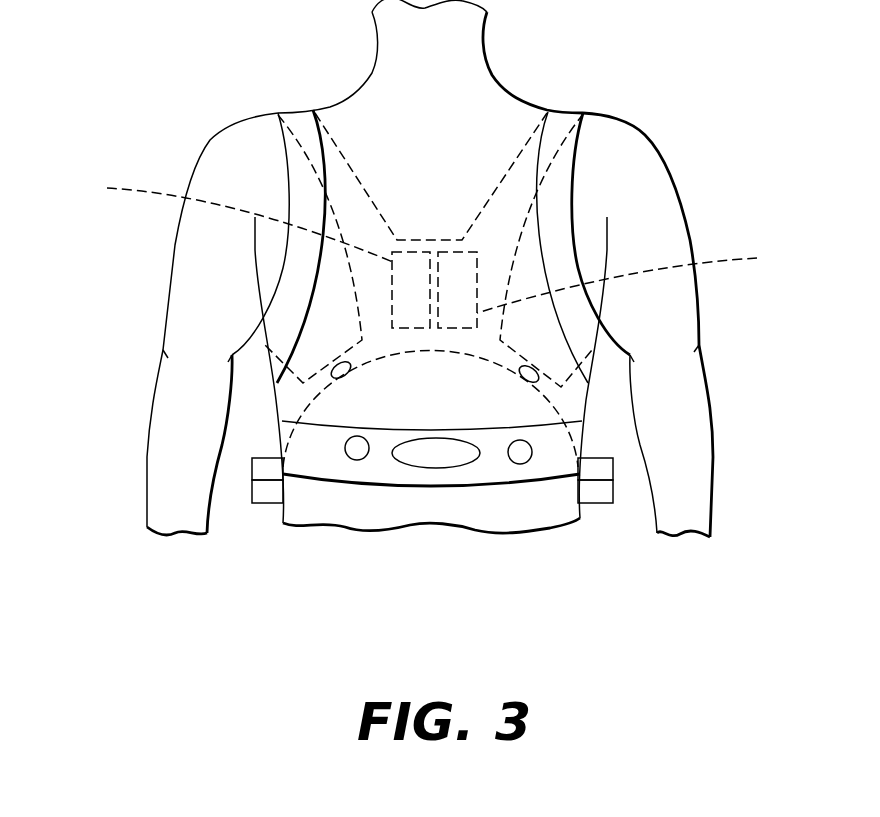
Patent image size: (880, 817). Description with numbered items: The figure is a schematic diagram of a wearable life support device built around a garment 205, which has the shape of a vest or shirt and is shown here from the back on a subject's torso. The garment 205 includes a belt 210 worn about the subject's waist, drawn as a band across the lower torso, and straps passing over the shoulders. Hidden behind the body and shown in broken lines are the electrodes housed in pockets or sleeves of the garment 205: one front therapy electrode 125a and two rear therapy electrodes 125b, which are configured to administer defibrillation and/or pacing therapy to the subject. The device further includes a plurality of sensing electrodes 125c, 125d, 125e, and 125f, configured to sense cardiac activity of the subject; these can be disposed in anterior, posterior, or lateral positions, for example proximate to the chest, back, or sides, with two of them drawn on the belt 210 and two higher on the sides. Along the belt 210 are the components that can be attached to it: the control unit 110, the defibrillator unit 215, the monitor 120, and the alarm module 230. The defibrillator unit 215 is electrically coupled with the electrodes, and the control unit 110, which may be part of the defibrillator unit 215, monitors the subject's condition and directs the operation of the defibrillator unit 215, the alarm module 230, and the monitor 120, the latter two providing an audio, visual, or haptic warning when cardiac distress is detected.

The control unit 110 is at (613, 497).
The monitor 120 is at (252, 498).
The front therapy electrode 125a is at (418, 467).
The rear therapy electrodes 125b is at (433, 250).
The sensing electrode 125c is at (349, 457).
The sensing electrode 125d is at (583, 560).
The sensing electrode 125e is at (330, 365).
The sensing electrode 125f is at (540, 367).
The garment 205 is at (290, 183).
The belt 210 is at (433, 487).
The defibrillator unit 215 is at (613, 460).
The alarm module 230 is at (252, 470).